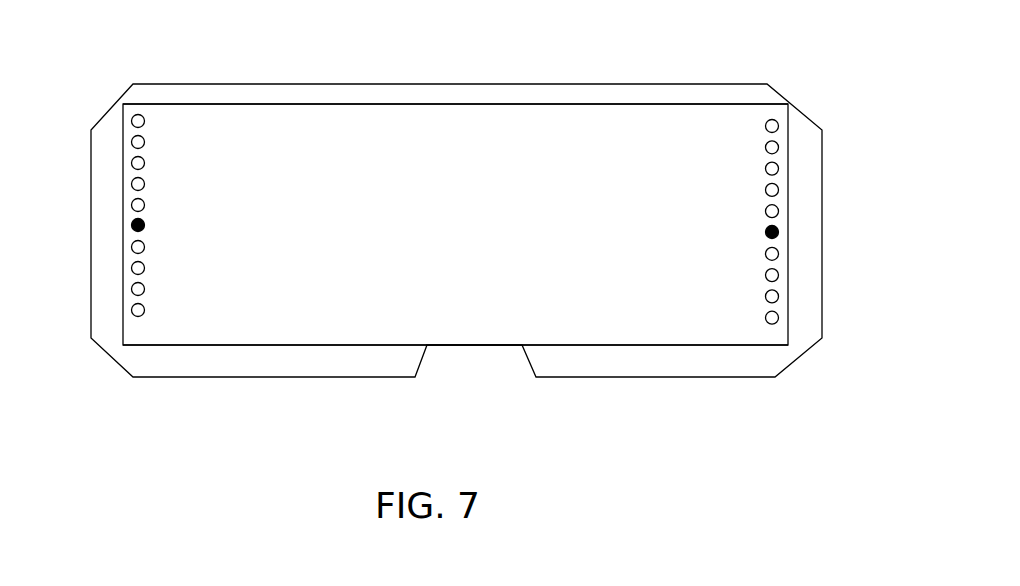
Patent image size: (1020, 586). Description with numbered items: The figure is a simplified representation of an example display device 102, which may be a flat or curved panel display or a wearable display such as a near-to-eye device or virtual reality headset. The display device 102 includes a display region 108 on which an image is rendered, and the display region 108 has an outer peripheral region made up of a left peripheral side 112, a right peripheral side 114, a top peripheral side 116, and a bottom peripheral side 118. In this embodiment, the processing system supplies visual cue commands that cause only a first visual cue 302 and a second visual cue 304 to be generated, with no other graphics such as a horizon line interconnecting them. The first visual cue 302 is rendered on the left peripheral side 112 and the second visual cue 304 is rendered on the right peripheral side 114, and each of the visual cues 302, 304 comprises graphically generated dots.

The display device 102 is at (726, 84).
The display region 108 is at (551, 132).
The left peripheral side 112 is at (128, 334).
The right peripheral side 114 is at (655, 151).
The top peripheral side 116 is at (414, 104).
The bottom peripheral side 118 is at (415, 345).
The first visual cue 302 is at (128, 224).
The second visual cue 304 is at (780, 232).